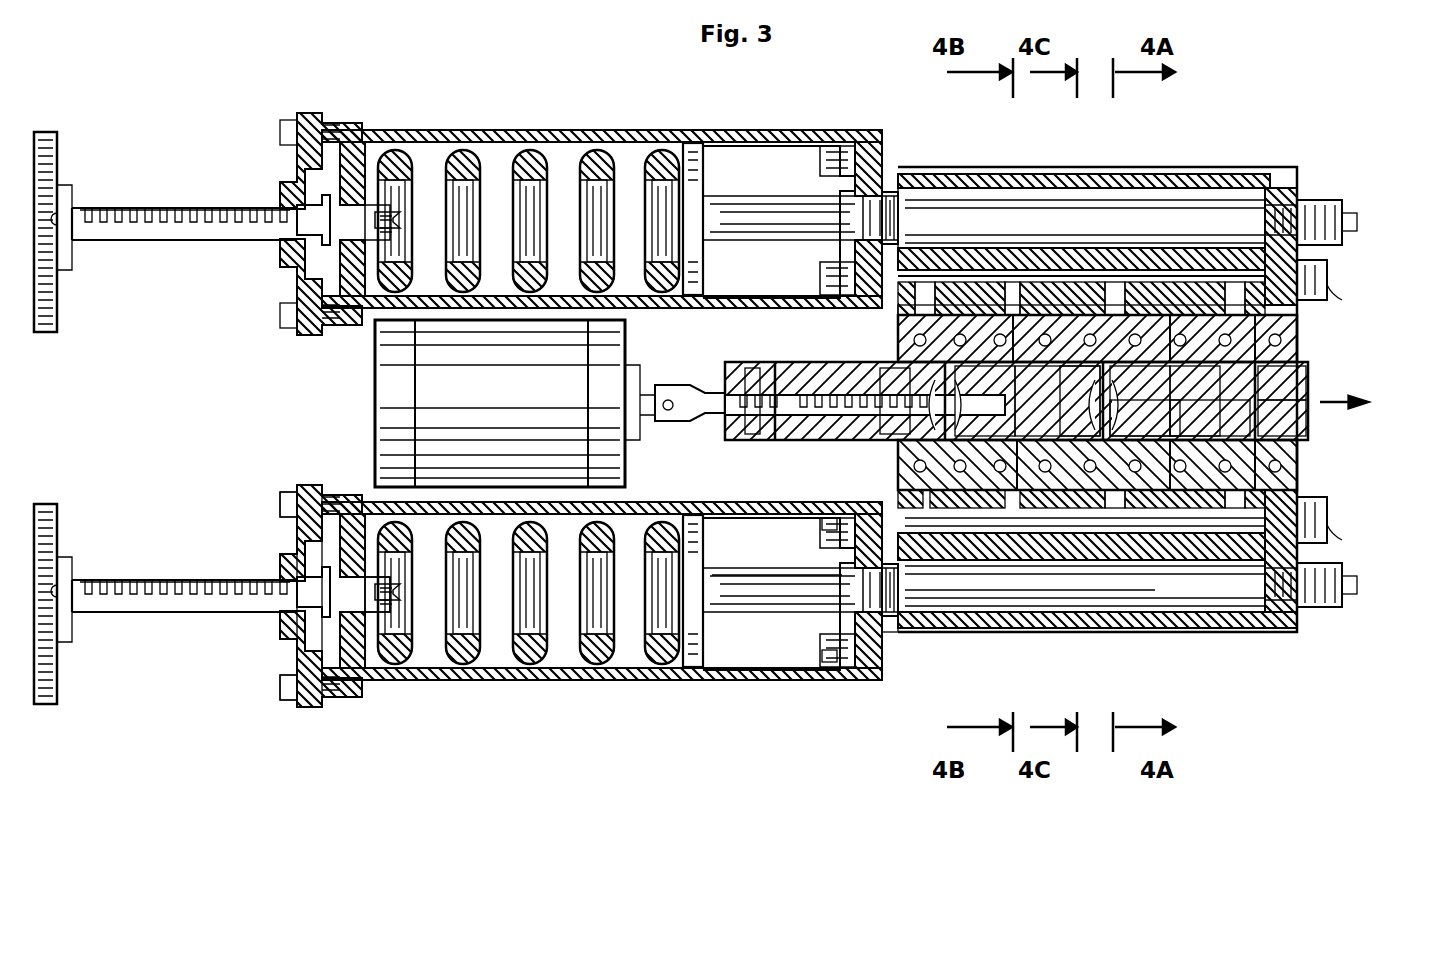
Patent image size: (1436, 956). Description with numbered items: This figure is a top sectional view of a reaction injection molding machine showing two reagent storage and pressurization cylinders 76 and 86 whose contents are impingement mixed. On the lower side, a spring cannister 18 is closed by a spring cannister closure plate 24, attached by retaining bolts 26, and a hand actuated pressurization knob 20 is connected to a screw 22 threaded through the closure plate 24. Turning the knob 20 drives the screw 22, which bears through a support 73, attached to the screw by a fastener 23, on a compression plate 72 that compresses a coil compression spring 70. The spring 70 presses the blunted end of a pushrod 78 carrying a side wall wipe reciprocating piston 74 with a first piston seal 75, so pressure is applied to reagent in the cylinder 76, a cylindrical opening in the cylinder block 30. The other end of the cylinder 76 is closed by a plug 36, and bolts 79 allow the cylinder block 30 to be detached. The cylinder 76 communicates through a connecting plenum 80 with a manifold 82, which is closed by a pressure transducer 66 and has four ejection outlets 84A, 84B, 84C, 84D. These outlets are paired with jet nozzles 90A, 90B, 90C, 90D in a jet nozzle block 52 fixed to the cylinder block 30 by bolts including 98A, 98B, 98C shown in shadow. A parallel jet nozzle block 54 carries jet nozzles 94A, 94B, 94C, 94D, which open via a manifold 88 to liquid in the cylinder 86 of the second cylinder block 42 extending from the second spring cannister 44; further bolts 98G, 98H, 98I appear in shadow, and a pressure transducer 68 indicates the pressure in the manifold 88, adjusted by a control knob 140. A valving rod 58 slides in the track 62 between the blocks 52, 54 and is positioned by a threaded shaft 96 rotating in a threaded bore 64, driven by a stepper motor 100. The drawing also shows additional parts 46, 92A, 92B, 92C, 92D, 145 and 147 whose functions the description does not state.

The spring cannister 18 is at (625, 680).
The hand actuated pressurization knob 20 is at (55, 704).
The screw 22 is at (210, 580).
The fastener 23 is at (400, 590).
The spring cannister closure plate 24 is at (300, 635).
The retaining bolts 26 is at (265, 745).
The cylinder block 30 is at (1165, 632).
The plug 36 is at (1335, 607).
The cylinder block 42 is at (1135, 175).
The spring cannister 44 is at (575, 130).
The adjustment screw 46 is at (1330, 200).
The jet nozzle block 52 is at (1297, 458).
The jet nozzle block 54 is at (1297, 325).
The valving rod 58 is at (1308, 368).
The track 62 is at (1308, 440).
The threaded bore 64 is at (748, 362).
The pressure transducer 66 is at (1327, 505).
The pressure transducer 68 is at (1327, 268).
The coil compression spring 70 is at (690, 680).
The compression plate 72 is at (320, 680).
The support 73 is at (400, 595).
The side wall wipe reciprocating piston 74 is at (898, 612).
The first piston seal 75 is at (890, 632).
The cylinder 76 is at (1010, 600).
The pushrod 78 is at (745, 592).
The bolts 79 is at (805, 707).
The connecting plenum 80 is at (1265, 585).
The manifold 82 is at (1000, 530).
The ejection outlet 84A is at (1265, 500).
The ejection outlet 84B is at (1150, 560).
The ejection outlet 84C is at (1060, 515).
The ejection outlet 84D is at (898, 500).
The cylinder 86 is at (1040, 187).
The manifold 88 is at (1040, 250).
The jet nozzle 90A is at (1284, 418).
The jet nozzle 90B is at (1145, 418).
The jet nozzle 90C is at (1055, 401).
The jet nozzle 90D is at (875, 440).
The gear 92A is at (1210, 418).
The gear 92B is at (1113, 390).
The gear 92C is at (994, 400).
The gear 92D is at (760, 440).
The jet nozzle 94A is at (1285, 381).
The jet nozzle 94B is at (1195, 399).
The jet nozzle 94C is at (1077, 400).
The jet nozzle 94D is at (880, 324).
The threaded shaft 96 is at (680, 385).
The bolt 98A is at (1185, 545).
The bolt 98B is at (1140, 515).
The bolt 98C is at (960, 515).
The bolt 98G is at (1165, 282).
The bolt 98H is at (1065, 282).
The bolt 98I is at (965, 282).
The stepper motor 100 is at (390, 382).
The control knob 140 is at (55, 332).
The piston 145 is at (650, 145).
The coupling 147 is at (900, 190).